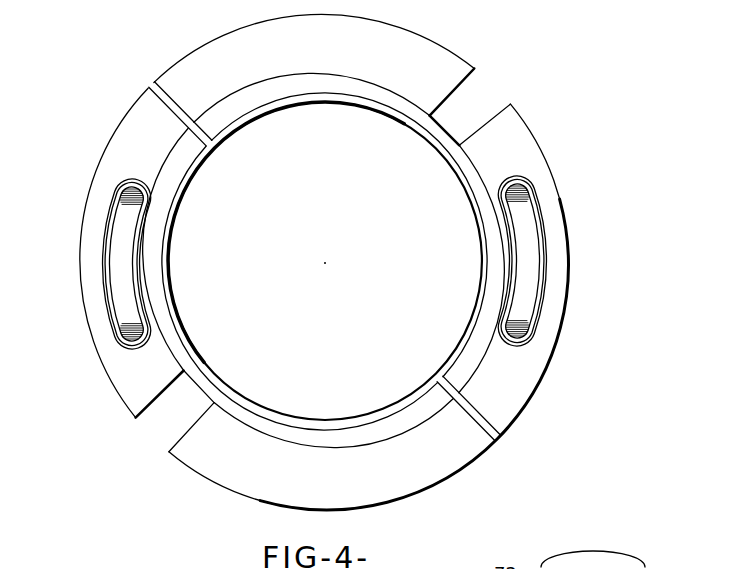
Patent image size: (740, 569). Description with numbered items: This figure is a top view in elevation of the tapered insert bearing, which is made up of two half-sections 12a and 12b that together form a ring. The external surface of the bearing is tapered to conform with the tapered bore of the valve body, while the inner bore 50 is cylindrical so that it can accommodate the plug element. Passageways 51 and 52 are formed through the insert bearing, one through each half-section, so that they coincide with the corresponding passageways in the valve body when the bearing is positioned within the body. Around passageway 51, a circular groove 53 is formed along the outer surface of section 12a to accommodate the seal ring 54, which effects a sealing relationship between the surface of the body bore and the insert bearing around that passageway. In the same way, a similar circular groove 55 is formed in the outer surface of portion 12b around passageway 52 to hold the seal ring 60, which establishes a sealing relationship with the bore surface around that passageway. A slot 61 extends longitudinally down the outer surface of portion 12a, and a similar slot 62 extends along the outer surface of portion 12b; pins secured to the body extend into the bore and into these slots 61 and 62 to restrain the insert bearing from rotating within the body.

The half-section 12a is at (112, 138).
The half-section 12b is at (536, 161).
The inner bore 50 is at (313, 101).
The passageway 51 is at (113, 243).
The passageway 52 is at (536, 289).
The circular groove 53 is at (100, 297).
The seal ring 54 is at (106, 269).
The circular groove 55 is at (548, 256).
The seal ring 60 is at (539, 223).
The slot 61 is at (137, 420).
The slot 62 is at (507, 102).